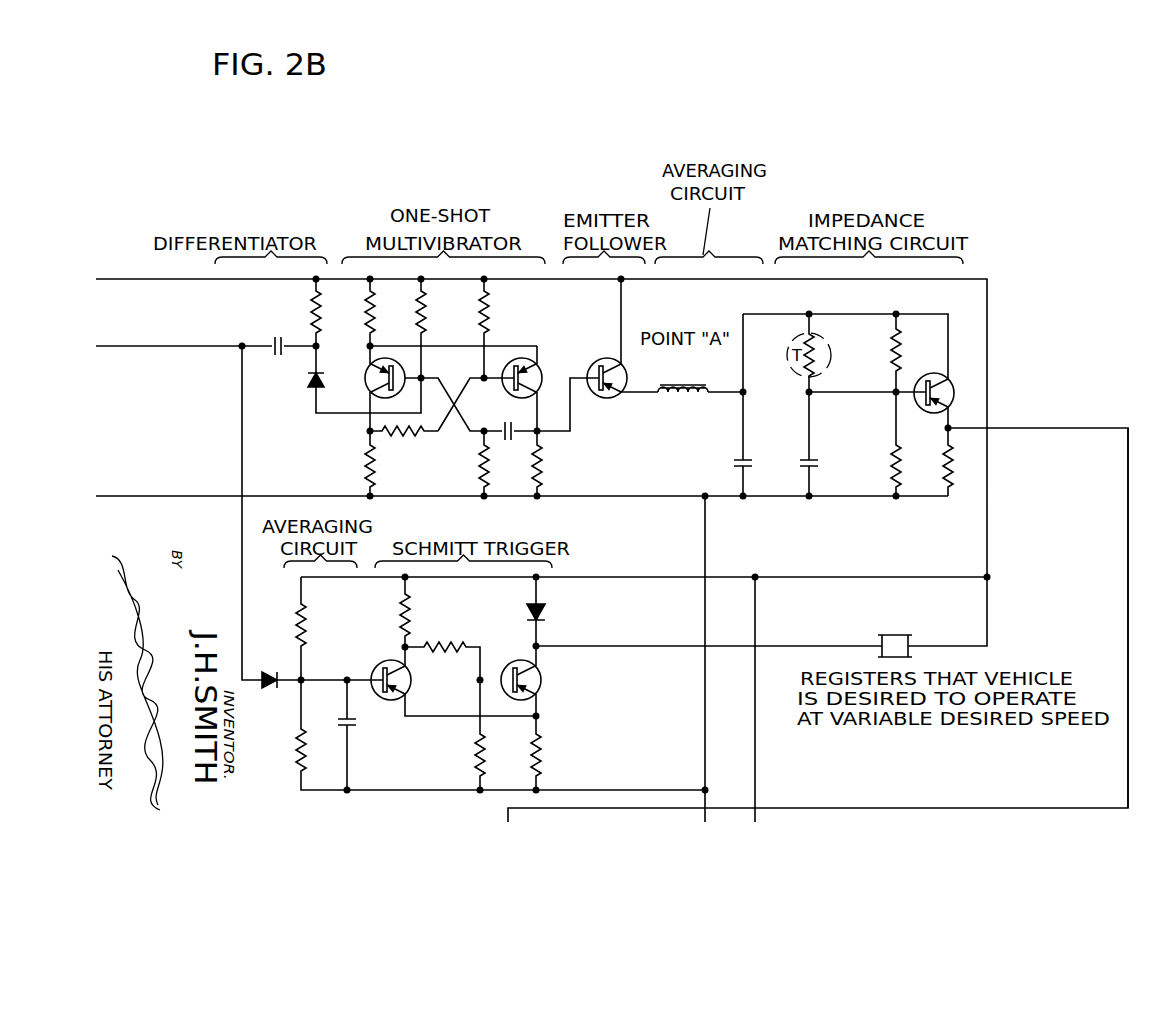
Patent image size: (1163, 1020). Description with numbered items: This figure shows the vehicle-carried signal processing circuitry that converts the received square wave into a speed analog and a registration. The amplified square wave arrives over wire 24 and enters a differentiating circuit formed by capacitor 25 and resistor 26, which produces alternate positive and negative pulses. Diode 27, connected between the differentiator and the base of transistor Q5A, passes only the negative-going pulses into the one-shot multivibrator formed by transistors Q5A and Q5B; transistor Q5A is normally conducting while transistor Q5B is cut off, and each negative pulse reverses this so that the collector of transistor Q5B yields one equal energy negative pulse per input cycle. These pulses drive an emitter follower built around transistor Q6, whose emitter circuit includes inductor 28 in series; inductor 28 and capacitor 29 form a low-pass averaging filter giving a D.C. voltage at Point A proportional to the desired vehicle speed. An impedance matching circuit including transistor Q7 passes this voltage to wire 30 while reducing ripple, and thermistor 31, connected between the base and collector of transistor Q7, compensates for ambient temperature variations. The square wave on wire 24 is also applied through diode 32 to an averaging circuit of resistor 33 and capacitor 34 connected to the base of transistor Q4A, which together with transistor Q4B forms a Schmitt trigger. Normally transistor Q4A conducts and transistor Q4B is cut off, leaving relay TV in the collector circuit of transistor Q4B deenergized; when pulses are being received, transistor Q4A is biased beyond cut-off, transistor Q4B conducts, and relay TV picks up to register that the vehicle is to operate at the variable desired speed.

The wire 24 is at (140, 344).
The capacitor 25 is at (276, 343).
The resistor 26 is at (321, 300).
The diode 27 is at (312, 386).
The inductor 28 is at (681, 400).
The capacitor 29 is at (736, 463).
The wire 30 is at (1128, 462).
The thermistor 31 is at (827, 345).
The diode 32 is at (273, 691).
The resistor 33 is at (304, 748).
The capacitor 34 is at (357, 728).
The transistor Q5A is at (368, 372).
The transistor Q5B is at (538, 371).
The transistor Q6 is at (610, 400).
The transistor Q7 is at (928, 381).
The transistor Q4A is at (379, 666).
The transistor Q4B is at (541, 670).
The relay TV is at (893, 636).